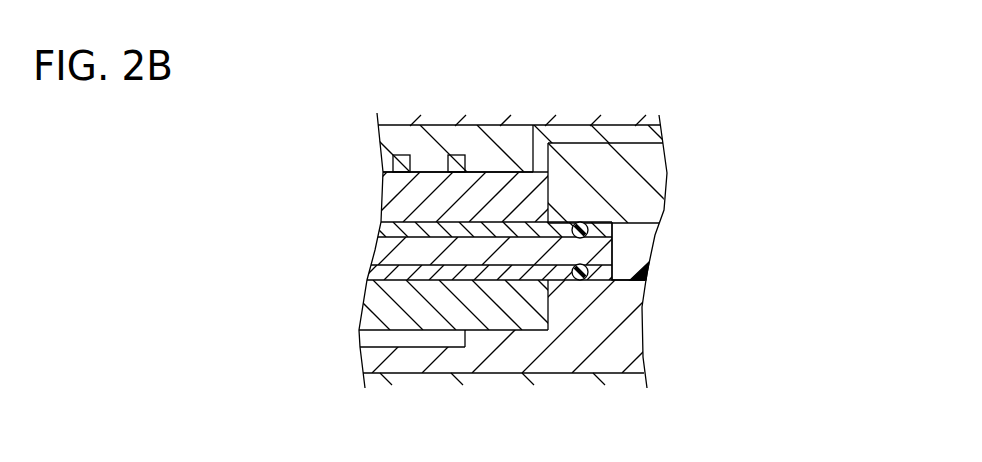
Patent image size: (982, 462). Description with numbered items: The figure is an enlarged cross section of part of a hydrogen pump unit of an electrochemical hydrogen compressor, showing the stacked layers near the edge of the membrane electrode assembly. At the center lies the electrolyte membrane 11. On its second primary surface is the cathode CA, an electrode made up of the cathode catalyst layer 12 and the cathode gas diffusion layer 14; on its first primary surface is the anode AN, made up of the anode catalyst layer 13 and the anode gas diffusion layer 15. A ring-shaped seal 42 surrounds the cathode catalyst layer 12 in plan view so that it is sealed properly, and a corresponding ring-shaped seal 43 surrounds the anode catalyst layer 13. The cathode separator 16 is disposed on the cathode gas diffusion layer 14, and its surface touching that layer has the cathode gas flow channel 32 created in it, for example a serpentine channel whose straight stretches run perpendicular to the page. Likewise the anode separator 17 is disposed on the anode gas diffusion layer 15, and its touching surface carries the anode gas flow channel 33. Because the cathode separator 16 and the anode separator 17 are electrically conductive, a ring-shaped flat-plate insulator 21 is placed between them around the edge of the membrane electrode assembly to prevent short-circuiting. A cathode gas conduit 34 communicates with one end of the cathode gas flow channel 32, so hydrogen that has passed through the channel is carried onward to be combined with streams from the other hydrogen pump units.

The electrolyte membrane 11 is at (385, 247).
The cathode catalyst layer 12 is at (380, 228).
The anode catalyst layer 13 is at (382, 272).
The cathode gas diffusion layer 14 is at (390, 200).
The anode gas diffusion layer 15 is at (388, 307).
The cathode separator 16 is at (655, 163).
The anode separator 17 is at (625, 335).
The insulator 21 is at (632, 253).
The cathode gas flow channel 32 is at (390, 163).
The anode gas flow channel 33 is at (368, 338).
The cathode gas conduit 34 is at (655, 137).
The seal 42 is at (584, 224).
The seal 43 is at (585, 280).
The cathode CA is at (258, 153).
The anode AN is at (258, 283).